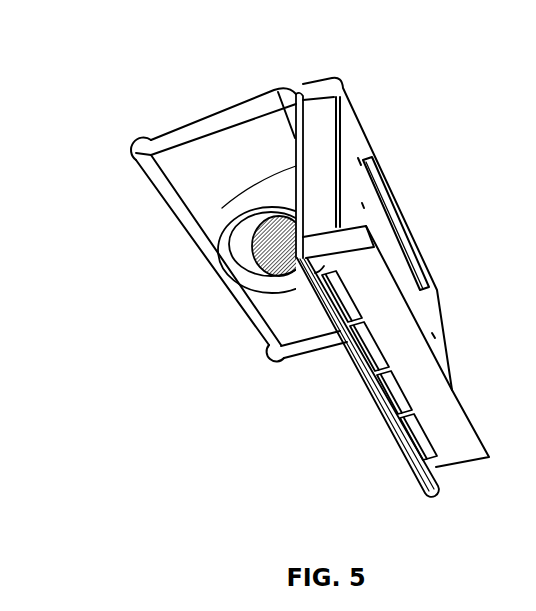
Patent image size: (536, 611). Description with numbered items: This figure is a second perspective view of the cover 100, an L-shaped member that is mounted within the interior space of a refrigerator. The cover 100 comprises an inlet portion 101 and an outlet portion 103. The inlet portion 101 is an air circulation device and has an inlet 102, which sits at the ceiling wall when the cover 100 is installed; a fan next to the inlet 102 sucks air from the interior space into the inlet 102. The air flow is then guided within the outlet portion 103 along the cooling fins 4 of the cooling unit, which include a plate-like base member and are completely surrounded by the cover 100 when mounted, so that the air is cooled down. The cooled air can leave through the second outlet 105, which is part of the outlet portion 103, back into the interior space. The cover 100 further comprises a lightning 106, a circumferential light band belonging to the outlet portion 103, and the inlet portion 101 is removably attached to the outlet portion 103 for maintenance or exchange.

The cover 100 is at (150, 264).
The inlet portion 101 is at (273, 213).
The inlet 102 is at (278, 262).
The outlet portion 103 is at (255, 128).
The second outlet 105 is at (357, 362).
The lightning 106 is at (245, 208).
The cooling fins 4 is at (357, 140).